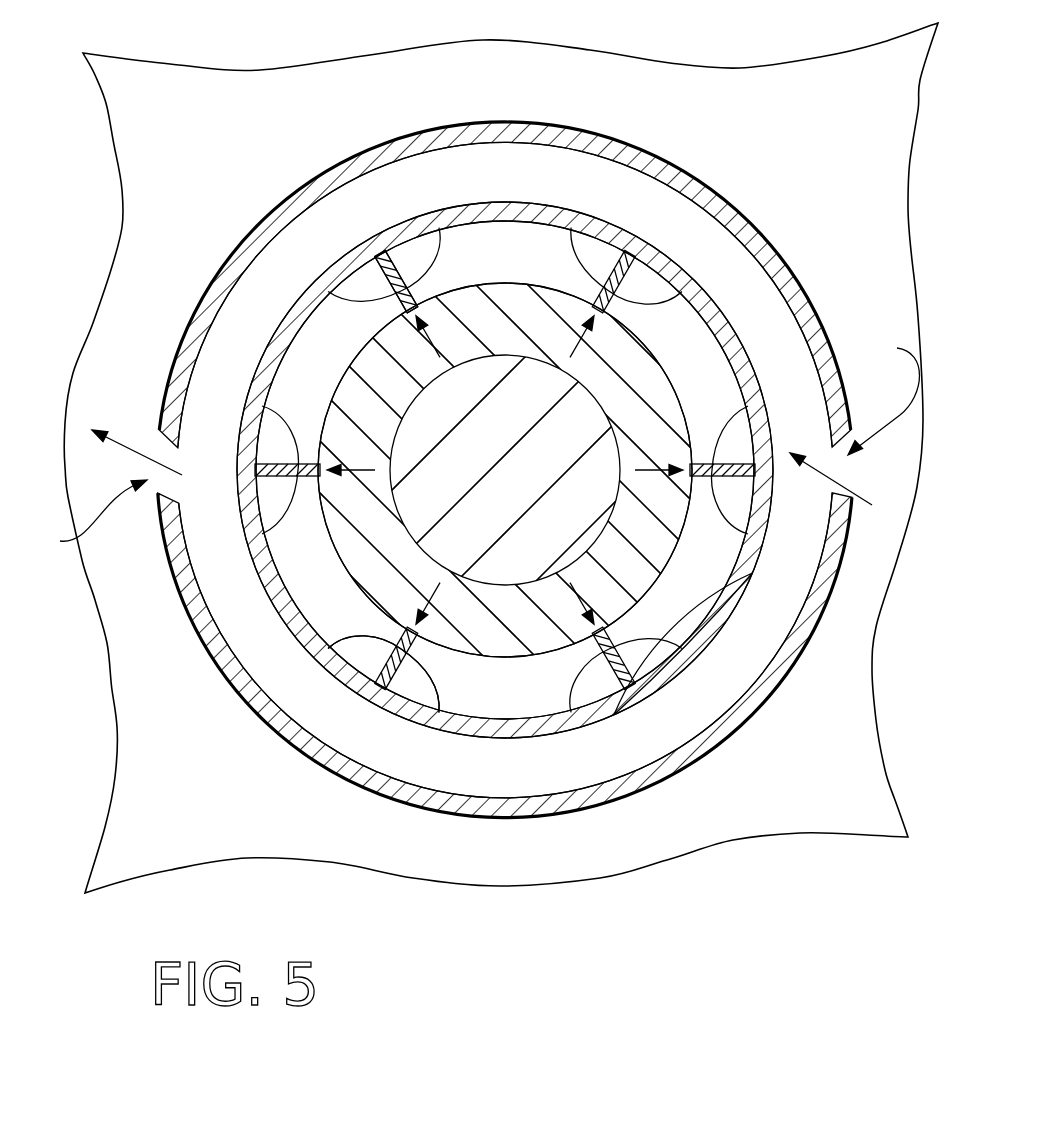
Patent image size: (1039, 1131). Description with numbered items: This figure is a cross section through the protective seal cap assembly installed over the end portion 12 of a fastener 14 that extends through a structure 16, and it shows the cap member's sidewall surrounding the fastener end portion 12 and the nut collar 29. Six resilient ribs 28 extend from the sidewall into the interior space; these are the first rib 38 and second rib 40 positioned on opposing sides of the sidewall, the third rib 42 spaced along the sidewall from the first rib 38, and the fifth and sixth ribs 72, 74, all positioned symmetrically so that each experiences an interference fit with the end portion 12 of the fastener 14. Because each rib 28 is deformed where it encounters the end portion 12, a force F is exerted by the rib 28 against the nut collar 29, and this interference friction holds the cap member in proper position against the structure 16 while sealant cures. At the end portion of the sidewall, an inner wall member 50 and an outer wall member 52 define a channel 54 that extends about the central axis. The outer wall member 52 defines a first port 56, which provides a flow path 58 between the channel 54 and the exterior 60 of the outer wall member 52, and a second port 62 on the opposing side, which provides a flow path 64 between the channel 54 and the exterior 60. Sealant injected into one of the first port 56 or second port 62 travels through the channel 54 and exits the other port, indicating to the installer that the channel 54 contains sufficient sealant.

The end portion 12 is at (440, 463).
The fastener 14 is at (353, 327).
The structure 16 is at (200, 113).
The rib 28 is at (262, 408).
The nut collar 29 is at (460, 298).
The first rib 38 is at (762, 392).
The second rib 40 is at (262, 528).
The third rib 42 is at (390, 677).
The inner wall member 50 is at (600, 307).
The outer wall member 52 is at (532, 133).
The channel 54 is at (470, 177).
The first port 56 is at (884, 395).
The flow path 58 is at (857, 497).
The exterior 60 is at (180, 292).
The second port 62 is at (85, 519).
The flow path 64 is at (137, 453).
The fifth rib 72 is at (675, 645).
The sixth rib 74 is at (393, 257).
The force F is at (428, 330).